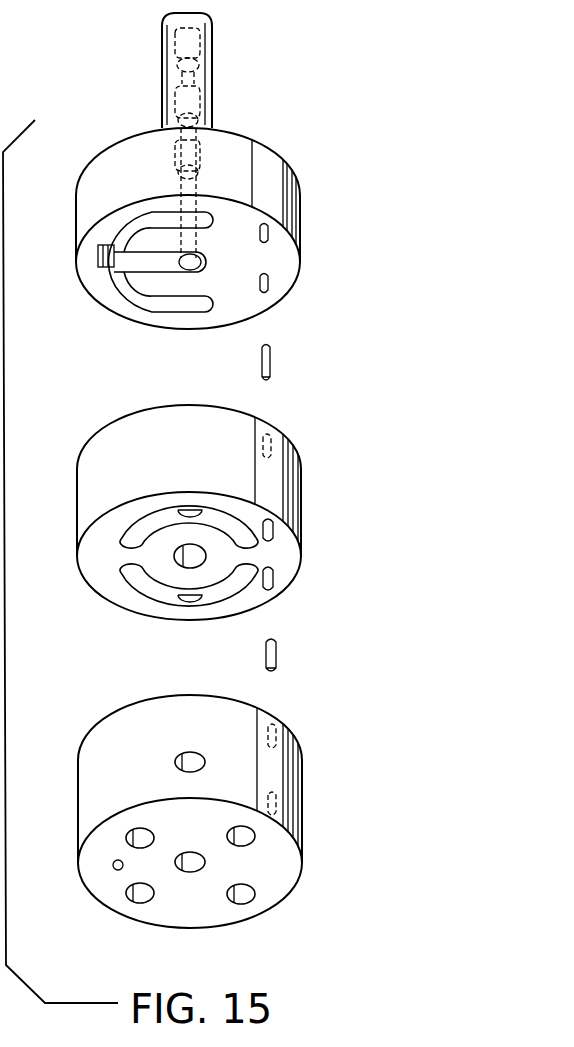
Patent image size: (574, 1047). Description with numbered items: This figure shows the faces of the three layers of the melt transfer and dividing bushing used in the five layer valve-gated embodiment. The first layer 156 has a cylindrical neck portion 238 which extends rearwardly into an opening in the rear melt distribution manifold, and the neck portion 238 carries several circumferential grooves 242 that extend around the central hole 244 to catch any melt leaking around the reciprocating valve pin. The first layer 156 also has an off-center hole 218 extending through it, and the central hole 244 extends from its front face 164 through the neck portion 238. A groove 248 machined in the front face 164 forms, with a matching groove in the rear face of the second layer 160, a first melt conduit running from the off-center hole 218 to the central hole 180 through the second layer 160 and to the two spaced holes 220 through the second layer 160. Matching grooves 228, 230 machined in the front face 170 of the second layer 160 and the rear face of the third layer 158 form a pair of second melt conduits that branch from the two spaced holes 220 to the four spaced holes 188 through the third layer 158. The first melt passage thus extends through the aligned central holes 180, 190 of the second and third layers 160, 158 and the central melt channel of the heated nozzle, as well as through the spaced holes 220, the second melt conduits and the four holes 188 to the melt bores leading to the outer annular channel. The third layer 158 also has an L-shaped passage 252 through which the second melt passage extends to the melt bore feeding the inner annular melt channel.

The cylindrical neck portion 238 is at (213, 60).
The circumferential grooves 242 is at (207, 107).
The first layer 156 is at (283, 200).
The front face 164 is at (282, 258).
The off-center hole 218 is at (100, 268).
The groove 248 is at (130, 300).
The central hole 244 is at (197, 265).
The second layer 160 is at (273, 486).
The front face 170 is at (108, 578).
The groove 228 is at (238, 596).
The central hole 180 is at (178, 557).
The groove 230 is at (190, 514).
The spaced holes 220 is at (190, 598).
The third layer 158 is at (283, 782).
The spaced holes 188 is at (255, 835).
The central hole 190 is at (205, 862).
The L-shaped passage 252 is at (117, 870).